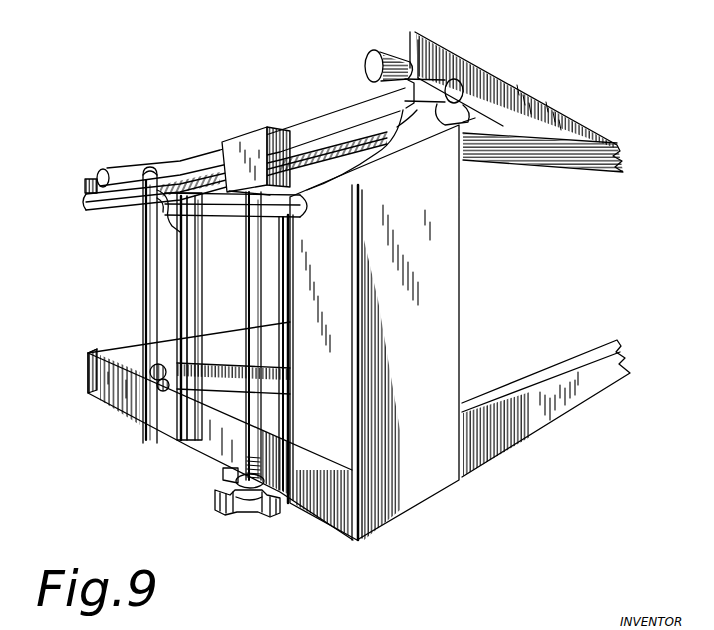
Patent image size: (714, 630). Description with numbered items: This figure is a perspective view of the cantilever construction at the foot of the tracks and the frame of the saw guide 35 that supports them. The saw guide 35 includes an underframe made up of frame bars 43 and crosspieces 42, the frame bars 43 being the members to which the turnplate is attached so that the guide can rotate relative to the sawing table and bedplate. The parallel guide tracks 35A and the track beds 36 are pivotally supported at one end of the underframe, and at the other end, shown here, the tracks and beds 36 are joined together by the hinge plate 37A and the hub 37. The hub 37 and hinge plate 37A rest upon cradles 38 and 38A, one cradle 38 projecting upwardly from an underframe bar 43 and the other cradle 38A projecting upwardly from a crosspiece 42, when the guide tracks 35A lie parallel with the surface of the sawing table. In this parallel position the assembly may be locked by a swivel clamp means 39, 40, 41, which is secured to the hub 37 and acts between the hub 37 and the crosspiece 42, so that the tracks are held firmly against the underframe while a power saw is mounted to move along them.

The saw guide 35 is at (468, 488).
The guide tracks 35A is at (128, 172).
The track beds 36 is at (88, 188).
The hub 37 is at (462, 52).
The hinge plate 37A is at (463, 118).
The cradle 38 is at (425, 482).
The cradle 38A is at (172, 304).
The swivel clamp means 39 is at (253, 277).
The swivel clamp means 40 is at (253, 507).
The swivel clamp means 41 is at (240, 153).
The crosspiece 42 is at (137, 390).
The frame bar 43 is at (557, 400).